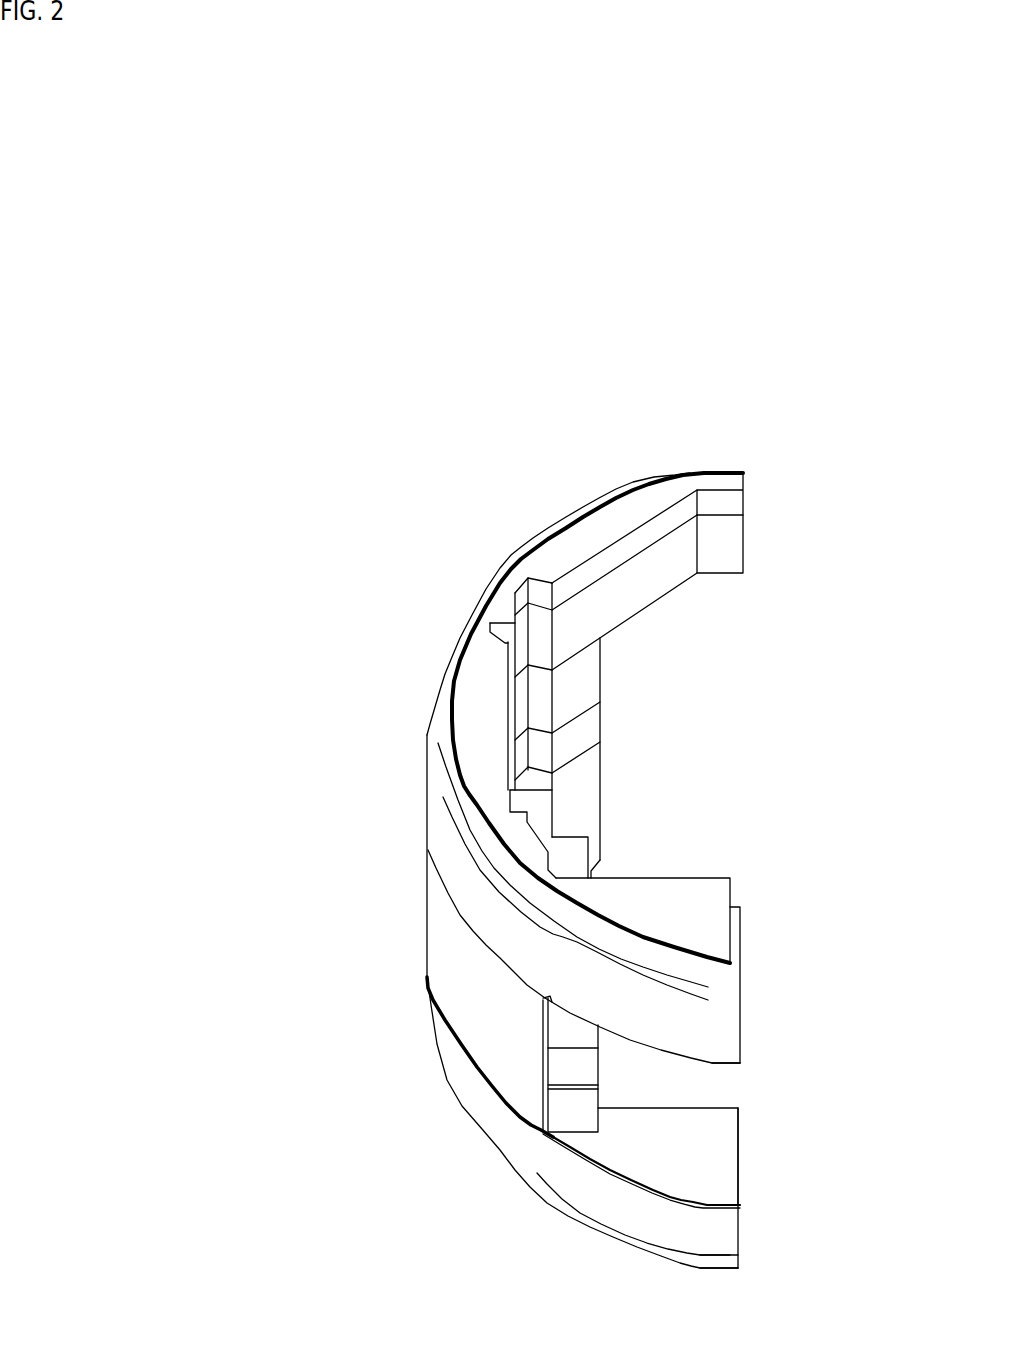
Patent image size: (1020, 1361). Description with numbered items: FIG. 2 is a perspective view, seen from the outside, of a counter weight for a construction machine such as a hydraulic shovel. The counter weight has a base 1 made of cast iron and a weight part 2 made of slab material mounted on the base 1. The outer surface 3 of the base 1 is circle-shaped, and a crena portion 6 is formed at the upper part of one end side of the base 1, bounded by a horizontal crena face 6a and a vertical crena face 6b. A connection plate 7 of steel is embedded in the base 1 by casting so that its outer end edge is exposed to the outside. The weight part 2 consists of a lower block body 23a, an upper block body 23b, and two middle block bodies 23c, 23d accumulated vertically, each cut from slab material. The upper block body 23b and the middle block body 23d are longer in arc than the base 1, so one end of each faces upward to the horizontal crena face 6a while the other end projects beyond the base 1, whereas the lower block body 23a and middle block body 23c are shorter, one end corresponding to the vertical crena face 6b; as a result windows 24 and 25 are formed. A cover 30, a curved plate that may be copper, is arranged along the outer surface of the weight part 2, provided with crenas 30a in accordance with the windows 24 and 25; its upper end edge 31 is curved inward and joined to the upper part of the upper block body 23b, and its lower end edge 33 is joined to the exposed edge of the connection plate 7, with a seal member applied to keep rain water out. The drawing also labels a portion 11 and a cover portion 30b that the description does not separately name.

The base 1 is at (757, 1190).
The weight part 2 is at (752, 915).
The outer surface 3 is at (612, 1210).
The crena portion 6 is at (712, 1153).
The horizontal crena face 6a is at (700, 1190).
The vertical crena face 6b is at (583, 1107).
The connection plate 7 is at (507, 1110).
The rib 11 is at (602, 811).
The lower block body 23a is at (592, 736).
The upper block body 23b is at (602, 523).
The middle block body 23c is at (588, 676).
The middle block body 23d is at (672, 577).
The window 24 is at (718, 1097).
The window 25 is at (712, 733).
The cover 30 is at (430, 927).
The crena 30a is at (590, 1018).
The end portion 30b is at (727, 575).
The upper end edge 31 is at (440, 700).
The lower end edge 33 is at (450, 1012).